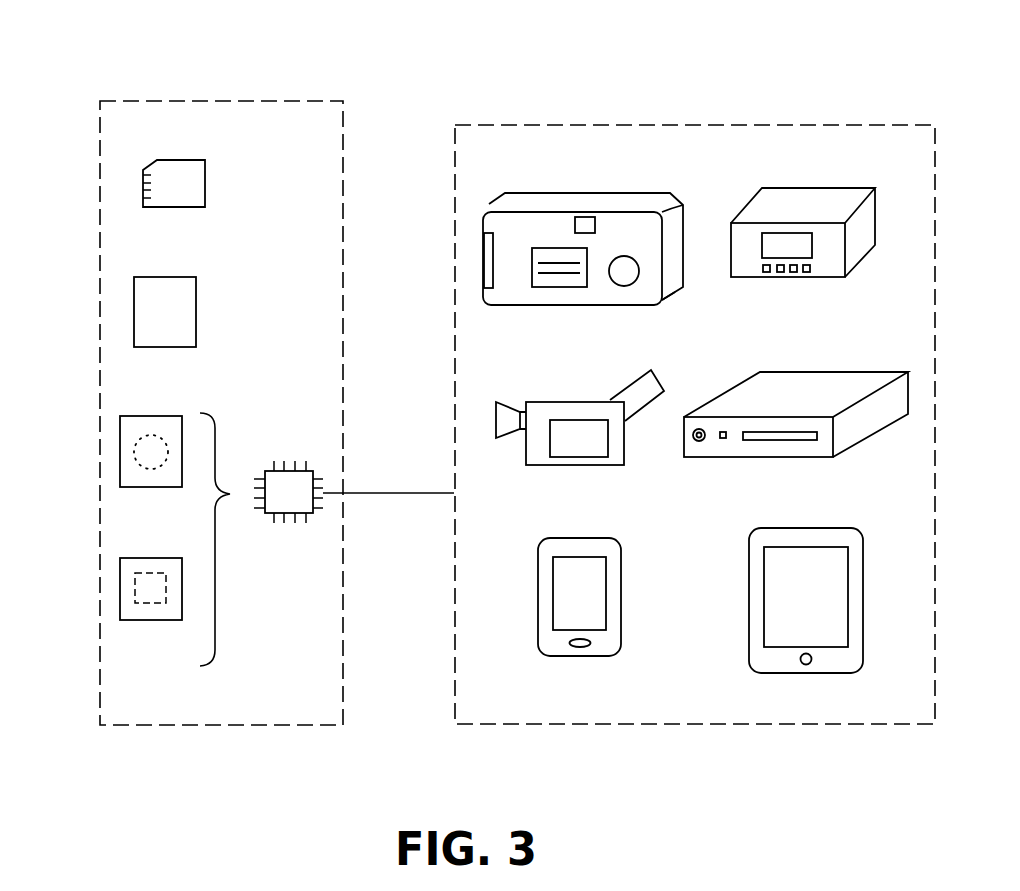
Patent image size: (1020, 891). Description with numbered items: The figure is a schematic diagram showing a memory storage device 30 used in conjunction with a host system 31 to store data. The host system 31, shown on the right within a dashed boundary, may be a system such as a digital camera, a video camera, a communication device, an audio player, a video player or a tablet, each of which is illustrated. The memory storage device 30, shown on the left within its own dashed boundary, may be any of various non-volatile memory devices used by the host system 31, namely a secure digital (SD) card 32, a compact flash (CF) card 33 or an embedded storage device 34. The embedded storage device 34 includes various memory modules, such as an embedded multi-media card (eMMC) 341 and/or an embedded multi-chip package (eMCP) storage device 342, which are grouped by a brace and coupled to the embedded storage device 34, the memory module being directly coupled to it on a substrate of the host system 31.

The memory storage device 30 is at (210, 100).
The host system 31 is at (620, 122).
The secure digital (SD) card 32 is at (143, 190).
The compact flash (CF) card 33 is at (134, 315).
The embedded storage device 34 is at (289, 461).
The embedded multi-media card (eMMC) 341 is at (120, 453).
The embedded multi-chip package (eMCP) storage device 342 is at (120, 590).